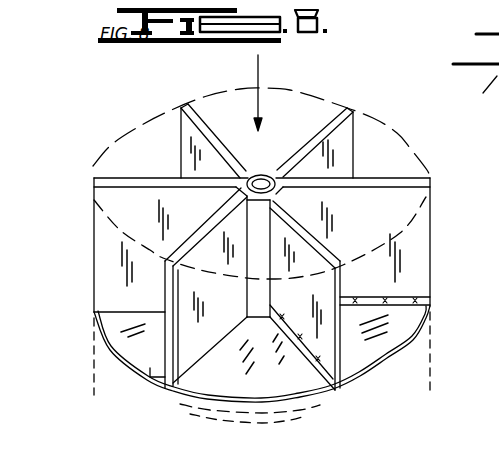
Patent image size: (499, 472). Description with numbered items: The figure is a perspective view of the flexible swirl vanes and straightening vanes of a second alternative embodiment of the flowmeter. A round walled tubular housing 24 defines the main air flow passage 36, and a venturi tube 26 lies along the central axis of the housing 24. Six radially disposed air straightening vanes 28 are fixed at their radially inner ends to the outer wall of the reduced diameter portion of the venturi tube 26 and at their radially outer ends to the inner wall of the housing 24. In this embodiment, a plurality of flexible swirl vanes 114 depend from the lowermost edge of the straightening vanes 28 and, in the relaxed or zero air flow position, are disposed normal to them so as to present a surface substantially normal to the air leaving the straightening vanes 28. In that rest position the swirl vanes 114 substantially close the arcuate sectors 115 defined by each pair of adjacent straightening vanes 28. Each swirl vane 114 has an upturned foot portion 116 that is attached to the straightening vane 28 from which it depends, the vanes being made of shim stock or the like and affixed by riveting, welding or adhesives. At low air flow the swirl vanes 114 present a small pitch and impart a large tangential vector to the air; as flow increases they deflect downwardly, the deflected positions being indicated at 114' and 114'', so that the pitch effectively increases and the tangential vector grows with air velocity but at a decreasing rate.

The tubular housing 24 is at (434, 262).
The venturi tube 26 is at (261, 176).
The air straightening vanes 28 is at (199, 103).
The main air flow passage 36 is at (286, 353).
The flexible swirl vanes 114 is at (254, 372).
The rim flange lip 114' is at (250, 431).
The rim flange lip 114'' is at (247, 440).
The arcuate sectors 115 is at (234, 370).
The upturned foot portion 116 is at (430, 300).